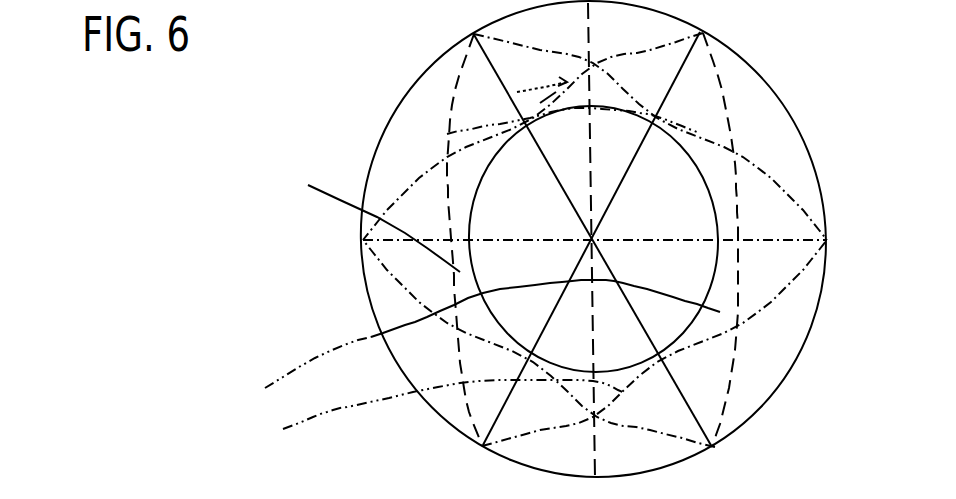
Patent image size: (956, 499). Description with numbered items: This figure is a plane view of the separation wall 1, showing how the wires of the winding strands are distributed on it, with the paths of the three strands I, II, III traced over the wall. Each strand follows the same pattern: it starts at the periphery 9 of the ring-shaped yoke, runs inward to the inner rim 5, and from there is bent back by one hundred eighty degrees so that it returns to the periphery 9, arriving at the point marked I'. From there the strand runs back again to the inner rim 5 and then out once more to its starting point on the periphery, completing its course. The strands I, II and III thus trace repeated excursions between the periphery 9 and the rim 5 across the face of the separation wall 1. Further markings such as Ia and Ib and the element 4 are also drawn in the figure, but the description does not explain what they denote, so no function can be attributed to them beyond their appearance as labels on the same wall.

The separation wall 1 is at (515, 240).
The outer ring 4 is at (526, 238).
The inner rim 5 is at (462, 239).
The periphery 9 is at (471, 240).
The first strand I is at (481, 257).
The point of return of strand I at the periphery I' is at (650, 122).
The curve Ia is at (351, 216).
The curve Ib is at (441, 411).
The second strand II is at (470, 132).
The third strand III is at (473, 136).